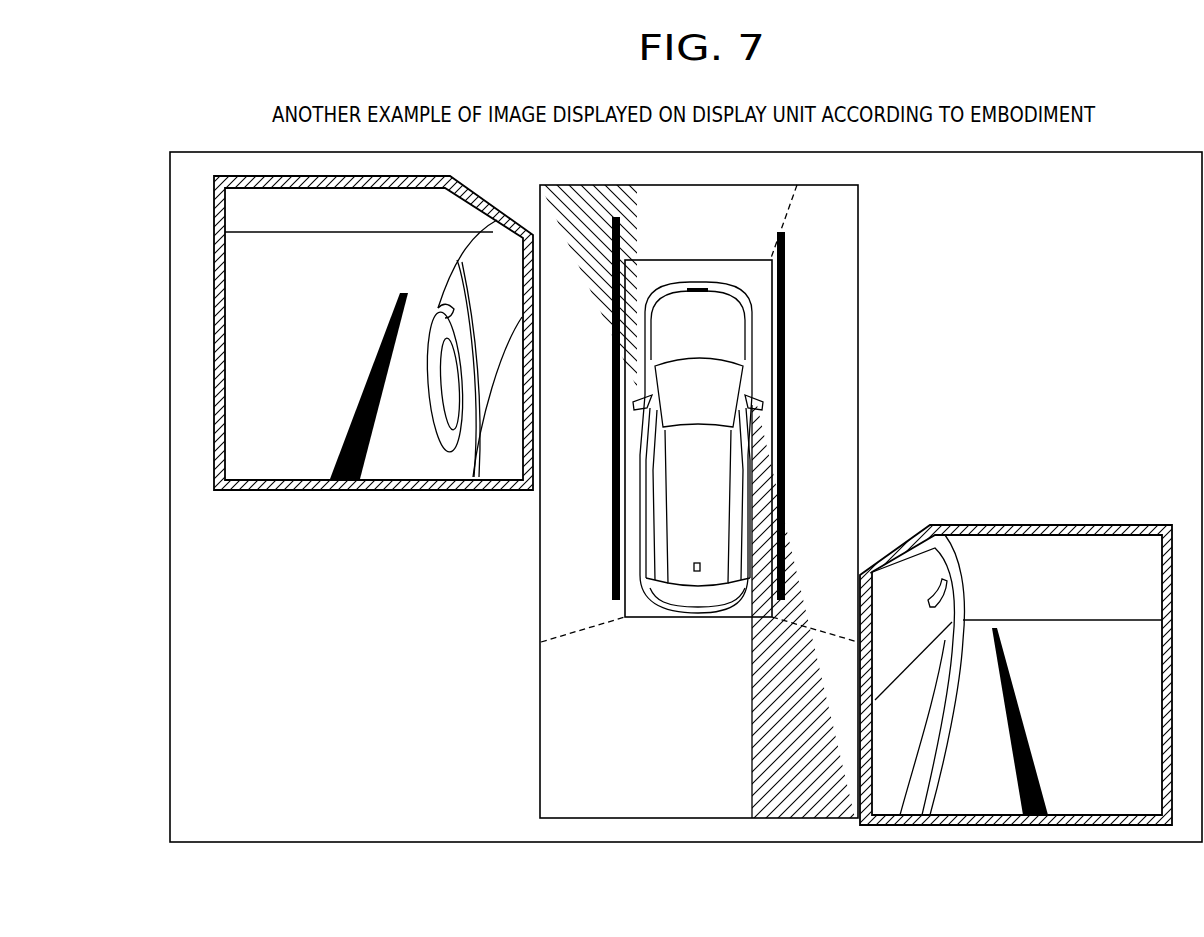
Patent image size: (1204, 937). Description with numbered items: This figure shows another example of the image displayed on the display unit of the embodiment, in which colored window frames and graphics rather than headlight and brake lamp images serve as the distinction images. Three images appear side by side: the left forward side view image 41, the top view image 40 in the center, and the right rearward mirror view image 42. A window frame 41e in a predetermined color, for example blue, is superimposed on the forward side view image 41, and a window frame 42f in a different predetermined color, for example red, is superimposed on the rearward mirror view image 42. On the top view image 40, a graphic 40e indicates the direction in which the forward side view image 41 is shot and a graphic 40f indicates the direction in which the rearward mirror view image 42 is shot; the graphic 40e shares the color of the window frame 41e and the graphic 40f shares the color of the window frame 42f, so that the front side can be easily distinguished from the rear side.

The top view image 40 is at (732, 501).
The graphic indicative of the direction in which the forward side view image is shot 40e is at (585, 270).
The graphic indicative of the direction in which the rearward mirror view image is s 40f is at (752, 700).
The left forward side view image 41 is at (373, 363).
The window frame 41e is at (420, 487).
The right rearward mirror view image 42 is at (1016, 640).
The window frame 42f is at (1030, 525).